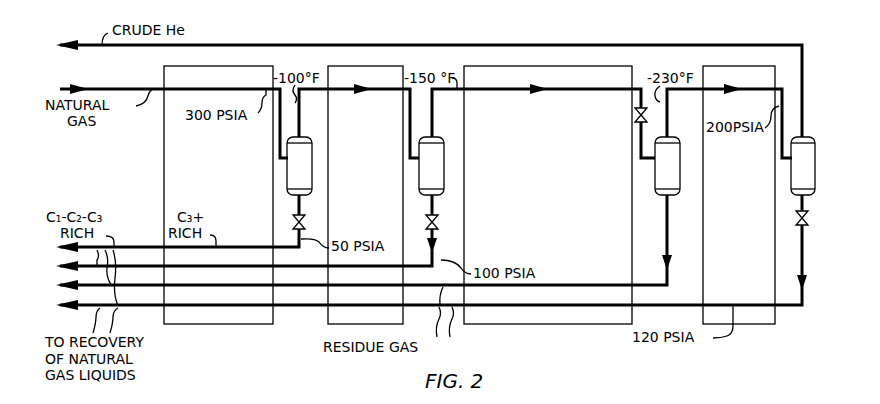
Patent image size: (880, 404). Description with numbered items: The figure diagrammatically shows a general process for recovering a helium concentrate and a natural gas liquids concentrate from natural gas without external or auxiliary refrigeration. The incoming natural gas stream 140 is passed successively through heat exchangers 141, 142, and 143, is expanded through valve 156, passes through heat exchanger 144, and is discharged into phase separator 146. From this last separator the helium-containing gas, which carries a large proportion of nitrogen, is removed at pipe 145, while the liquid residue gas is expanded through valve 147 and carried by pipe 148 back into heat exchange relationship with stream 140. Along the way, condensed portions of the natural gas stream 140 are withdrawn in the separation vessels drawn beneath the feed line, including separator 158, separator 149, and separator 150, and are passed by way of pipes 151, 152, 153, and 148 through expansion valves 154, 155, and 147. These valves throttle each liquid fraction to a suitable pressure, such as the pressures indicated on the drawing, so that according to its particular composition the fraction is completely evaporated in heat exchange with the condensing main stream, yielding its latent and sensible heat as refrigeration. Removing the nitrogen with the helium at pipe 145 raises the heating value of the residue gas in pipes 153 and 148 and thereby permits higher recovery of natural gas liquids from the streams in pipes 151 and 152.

The natural gas stream 140 is at (135, 89).
The heat exchanger 141 is at (229, 150).
The heat exchanger 142 is at (379, 150).
The heat exchanger 143 is at (568, 258).
The heat exchanger 144 is at (755, 256).
The pipe 145 is at (559, 45).
The phase separator 146 is at (795, 172).
The valve 147 is at (798, 218).
The pipe 148 is at (799, 200).
The second separator 149 is at (436, 170).
The third separator 150 is at (660, 174).
The pipe 151 is at (298, 203).
The pipe 152 is at (436, 200).
The pipe 153 is at (662, 201).
The expansion valve 154 is at (293, 219).
The expansion valve 155 is at (438, 218).
The valve 156 is at (635, 116).
The first separator 158 is at (297, 172).